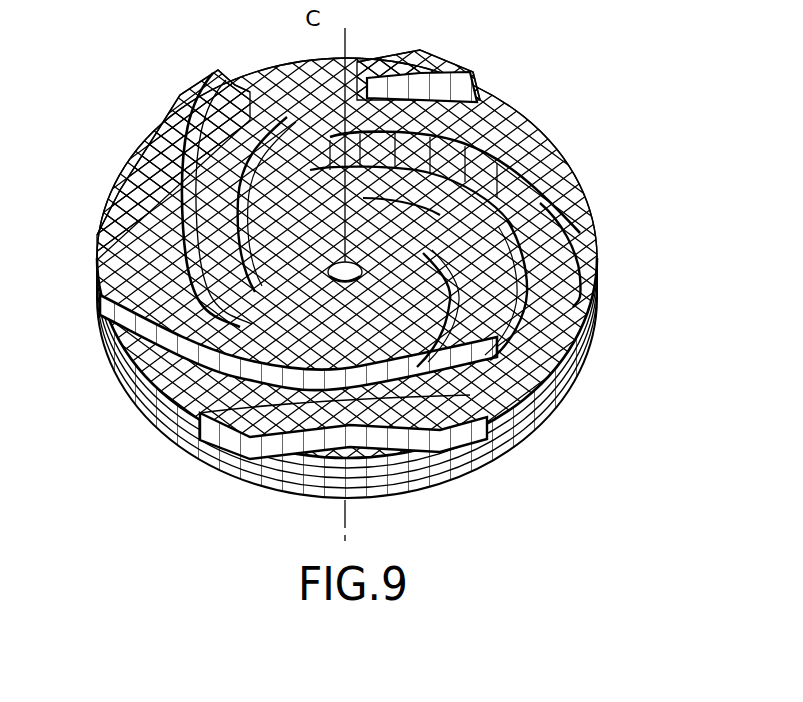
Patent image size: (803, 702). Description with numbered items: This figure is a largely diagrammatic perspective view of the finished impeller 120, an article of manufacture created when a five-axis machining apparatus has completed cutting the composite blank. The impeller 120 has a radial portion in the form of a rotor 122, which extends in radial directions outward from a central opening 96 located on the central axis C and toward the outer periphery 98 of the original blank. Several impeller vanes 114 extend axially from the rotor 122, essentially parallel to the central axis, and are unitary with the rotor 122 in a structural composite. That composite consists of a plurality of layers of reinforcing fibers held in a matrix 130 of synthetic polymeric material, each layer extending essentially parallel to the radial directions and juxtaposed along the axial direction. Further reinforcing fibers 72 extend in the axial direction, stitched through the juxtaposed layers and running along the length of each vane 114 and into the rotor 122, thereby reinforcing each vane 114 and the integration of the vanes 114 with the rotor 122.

The impeller 120 is at (601, 322).
The rotor 122 is at (392, 496).
The matrix 130 is at (505, 432).
The impeller vanes 114 is at (439, 63).
The outer periphery 98 is at (132, 178).
The further reinforcing fibers 72 is at (458, 445).
The central opening 96 is at (357, 266).